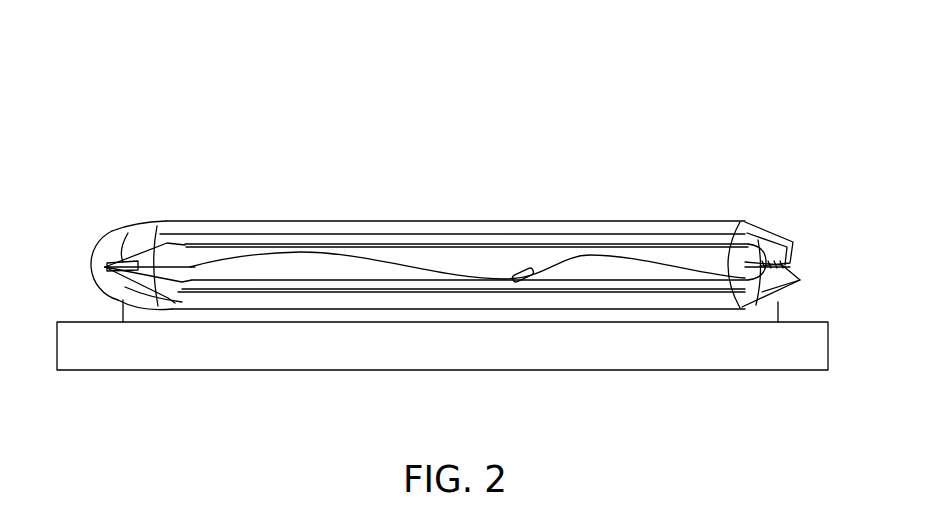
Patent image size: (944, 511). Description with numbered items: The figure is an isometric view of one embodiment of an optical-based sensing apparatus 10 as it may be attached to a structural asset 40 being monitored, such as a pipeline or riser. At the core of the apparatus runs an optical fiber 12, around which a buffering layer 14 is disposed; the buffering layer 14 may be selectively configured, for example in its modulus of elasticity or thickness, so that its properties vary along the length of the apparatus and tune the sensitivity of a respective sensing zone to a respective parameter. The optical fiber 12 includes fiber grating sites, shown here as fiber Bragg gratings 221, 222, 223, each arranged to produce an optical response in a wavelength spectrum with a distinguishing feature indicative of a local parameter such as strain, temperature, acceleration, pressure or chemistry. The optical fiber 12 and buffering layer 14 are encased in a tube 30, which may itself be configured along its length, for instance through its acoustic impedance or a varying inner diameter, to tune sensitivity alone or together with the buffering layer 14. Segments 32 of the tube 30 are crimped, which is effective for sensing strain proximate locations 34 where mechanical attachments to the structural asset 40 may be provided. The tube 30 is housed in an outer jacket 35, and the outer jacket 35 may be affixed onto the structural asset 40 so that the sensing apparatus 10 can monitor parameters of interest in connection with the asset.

The optical-based sensing apparatus 10 is at (367, 120).
The optical fiber 12 is at (273, 258).
The buffering layer 14 is at (474, 262).
The fiber Bragg grating 221 is at (125, 260).
The fiber Bragg grating 222 is at (522, 270).
The fiber Bragg grating 223 is at (792, 242).
The tube 30 is at (417, 248).
The crimped segments 32 is at (152, 228).
The locations 34 is at (117, 300).
The outer jacket 35 is at (625, 222).
The structural asset 40 is at (443, 370).